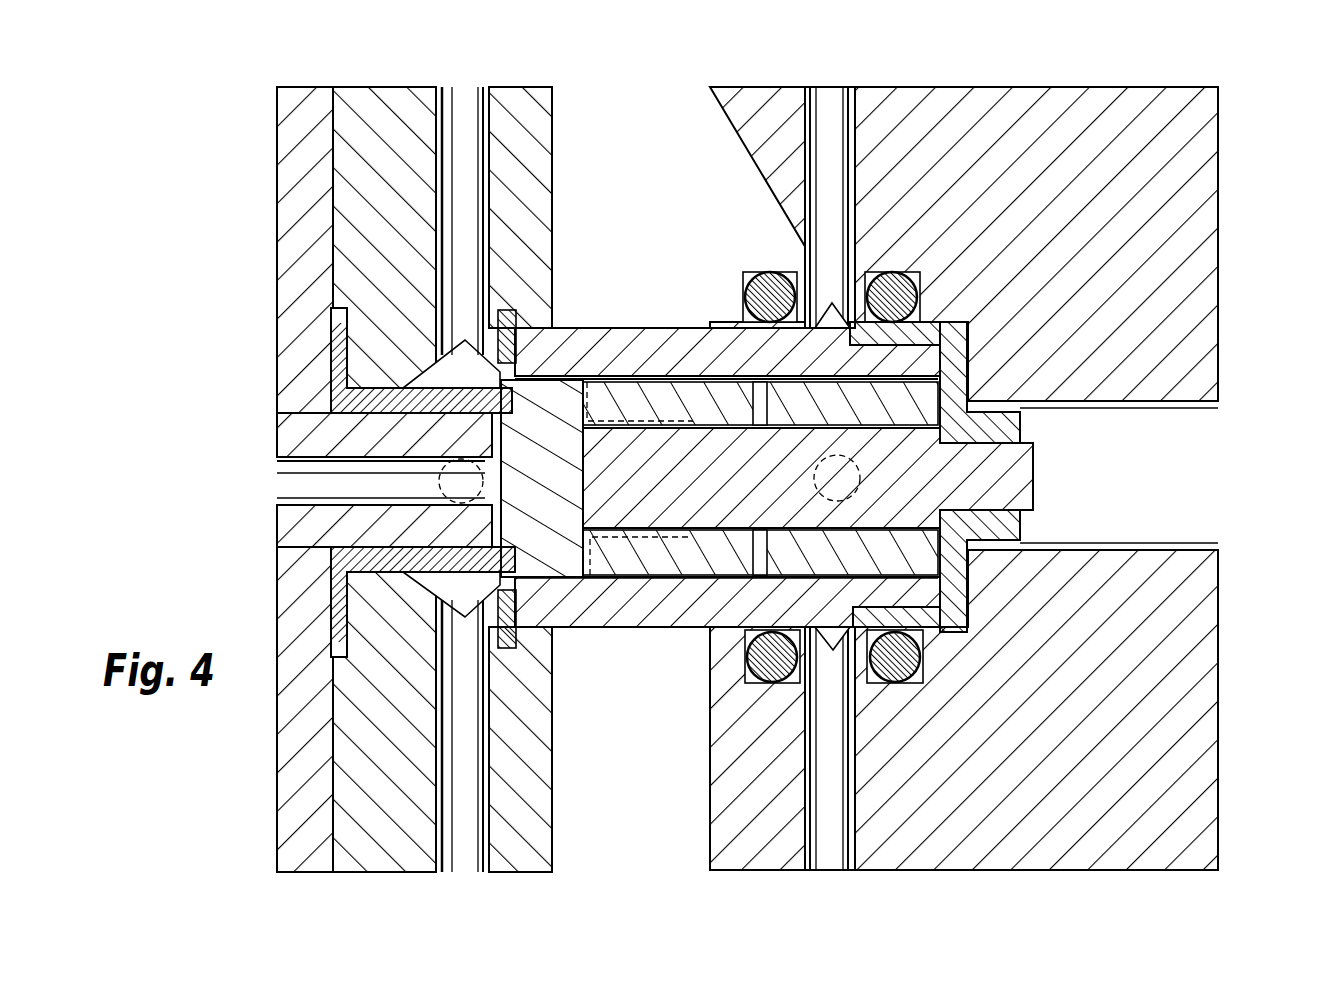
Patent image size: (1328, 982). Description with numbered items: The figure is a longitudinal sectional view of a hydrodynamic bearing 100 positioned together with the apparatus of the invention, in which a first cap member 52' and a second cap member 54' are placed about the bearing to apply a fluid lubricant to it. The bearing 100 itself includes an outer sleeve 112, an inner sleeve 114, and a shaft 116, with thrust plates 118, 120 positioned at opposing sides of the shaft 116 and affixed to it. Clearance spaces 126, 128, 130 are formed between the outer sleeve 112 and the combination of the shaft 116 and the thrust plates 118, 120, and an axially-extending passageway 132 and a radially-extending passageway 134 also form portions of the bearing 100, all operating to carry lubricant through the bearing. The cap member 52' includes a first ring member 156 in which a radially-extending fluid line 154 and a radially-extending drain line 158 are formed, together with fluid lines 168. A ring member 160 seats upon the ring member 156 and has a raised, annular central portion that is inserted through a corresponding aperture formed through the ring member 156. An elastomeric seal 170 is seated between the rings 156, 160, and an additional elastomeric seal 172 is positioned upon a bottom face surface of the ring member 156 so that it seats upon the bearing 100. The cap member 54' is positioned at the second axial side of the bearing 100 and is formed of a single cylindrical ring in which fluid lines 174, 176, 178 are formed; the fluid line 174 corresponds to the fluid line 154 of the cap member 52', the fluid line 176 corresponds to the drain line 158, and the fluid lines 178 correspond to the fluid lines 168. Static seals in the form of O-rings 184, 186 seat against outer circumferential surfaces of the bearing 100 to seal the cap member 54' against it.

The first cap member 52' is at (468, 453).
The second cap member 54' is at (1007, 470).
The hydrodynamic bearing 100 is at (900, 462).
The outer sleeve 112 is at (609, 330).
The inner sleeve 114 is at (607, 566).
The shaft 116 is at (657, 505).
The thrust plate 118 is at (540, 548).
The thrust plate 120 is at (1032, 443).
The clearance space 126 is at (563, 335).
The clearance space 128 is at (563, 332).
The clearance space 130 is at (590, 340).
The axially-extending passageway 132 is at (640, 530).
The radially-extending passageway 134 is at (745, 560).
The fluid line 154 is at (470, 115).
The first ring member 156 is at (548, 88).
The drain line 158 is at (452, 872).
The ring member 160 is at (292, 96).
The fluid lines 168 is at (440, 477).
The elastomeric seal 170 is at (330, 352).
The elastomeric seal 172 is at (507, 310).
The fluid line 174 is at (830, 112).
The fluid line 176 is at (843, 850).
The fluid lines 178 is at (862, 478).
The O-ring 184 is at (765, 660).
The O-ring 186 is at (880, 660).